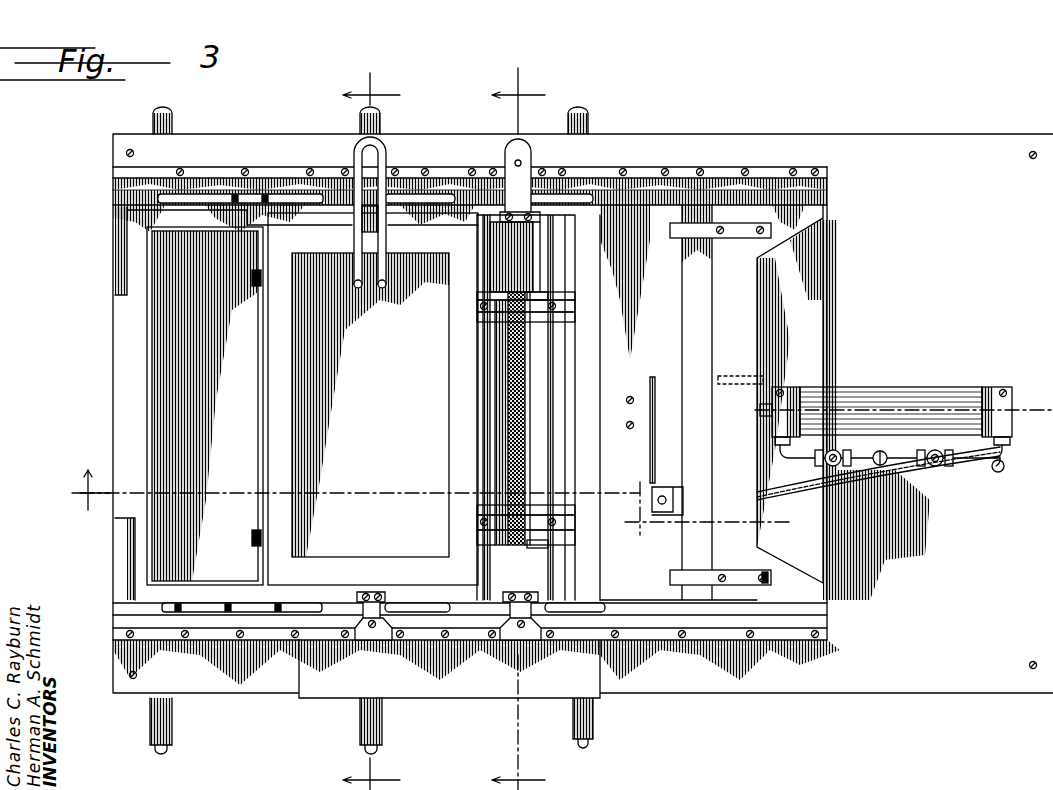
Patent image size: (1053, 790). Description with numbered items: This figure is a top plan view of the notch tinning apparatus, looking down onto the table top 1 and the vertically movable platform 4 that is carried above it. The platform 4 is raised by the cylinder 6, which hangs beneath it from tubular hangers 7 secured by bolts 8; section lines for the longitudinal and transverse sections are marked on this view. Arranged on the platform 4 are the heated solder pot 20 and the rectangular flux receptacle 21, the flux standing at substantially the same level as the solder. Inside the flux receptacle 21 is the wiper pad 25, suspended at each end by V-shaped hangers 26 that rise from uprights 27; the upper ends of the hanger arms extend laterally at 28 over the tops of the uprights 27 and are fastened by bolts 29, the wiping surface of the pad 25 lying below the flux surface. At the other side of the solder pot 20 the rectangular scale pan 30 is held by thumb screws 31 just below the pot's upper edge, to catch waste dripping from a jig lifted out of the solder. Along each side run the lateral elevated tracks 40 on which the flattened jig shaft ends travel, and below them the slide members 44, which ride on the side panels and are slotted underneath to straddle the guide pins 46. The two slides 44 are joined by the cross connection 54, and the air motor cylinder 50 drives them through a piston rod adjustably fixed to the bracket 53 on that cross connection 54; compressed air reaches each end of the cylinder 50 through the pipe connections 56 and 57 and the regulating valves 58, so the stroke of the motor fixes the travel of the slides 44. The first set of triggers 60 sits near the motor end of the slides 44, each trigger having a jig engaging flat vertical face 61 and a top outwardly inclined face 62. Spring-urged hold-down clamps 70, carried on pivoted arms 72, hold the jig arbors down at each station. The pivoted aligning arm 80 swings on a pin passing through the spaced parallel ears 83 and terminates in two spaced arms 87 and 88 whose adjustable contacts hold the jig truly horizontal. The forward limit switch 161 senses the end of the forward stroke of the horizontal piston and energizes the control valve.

The table top 1 is at (956, 134).
The vertically movable platform 4 is at (553, 238).
The cylinder 6 is at (353, 490).
The tubular hangers 7 is at (371, 431).
The bolts 8 is at (641, 429).
The heated solder pot 20 is at (274, 407).
The flux receptacle 21 is at (535, 364).
The wiper pad 25 is at (525, 392).
The hangers 26 is at (547, 296).
The uprights 27 is at (480, 294).
The laterally extending upper ends 28 is at (480, 312).
The bolts 29 is at (480, 306).
The scale pan 30 is at (230, 392).
The thumb screws 31 is at (254, 287).
The lateral elevated tracks 40 is at (640, 183).
The slide members 44 is at (625, 200).
The guide pins or screws 46 is at (262, 198).
The cylinder 50 is at (909, 388).
The bracket 53 is at (790, 386).
The cross connection 54 is at (745, 345).
The pipe connection 56 is at (798, 462).
The pipe connection 57 is at (1005, 446).
The regulating valves 58 is at (925, 450).
The first set of triggers 60 is at (748, 219).
The jig engaging flat vertical faces 61 is at (670, 232).
The top outwardly inclined faces 62 is at (705, 235).
The spring-urged hold-down clamps 70 is at (540, 148).
The pivoted arms 72 is at (375, 224).
The pivoted aligning arm 80 is at (351, 237).
The spaced parallel ears 83 is at (368, 180).
The spaced arm 87 is at (356, 288).
The spaced arm 88 is at (384, 286).
The forward limit switch 161 is at (665, 358).